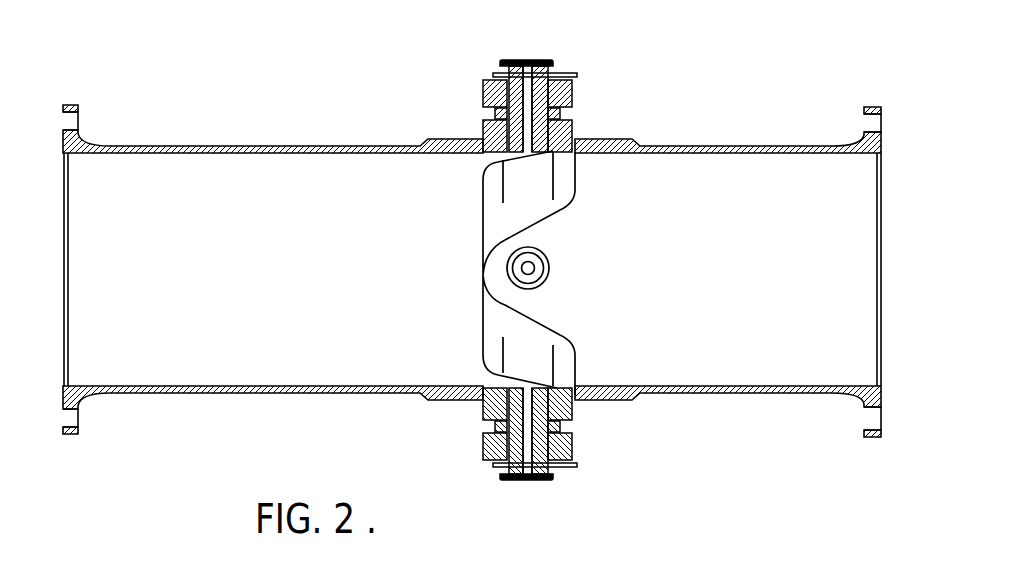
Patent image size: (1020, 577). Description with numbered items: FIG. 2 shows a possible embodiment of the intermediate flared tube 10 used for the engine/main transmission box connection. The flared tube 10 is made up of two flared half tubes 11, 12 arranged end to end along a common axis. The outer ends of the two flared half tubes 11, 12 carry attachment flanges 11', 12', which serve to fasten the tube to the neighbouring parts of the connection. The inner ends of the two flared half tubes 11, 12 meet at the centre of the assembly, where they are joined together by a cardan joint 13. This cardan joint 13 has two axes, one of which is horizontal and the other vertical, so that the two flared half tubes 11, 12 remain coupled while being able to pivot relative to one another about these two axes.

The intermediate flared tube 10 is at (640, 138).
The flared half tube 11 is at (728, 251).
The attachment flange 11' is at (851, 252).
The flared half tube 12 is at (273, 248).
The attachment flange 12' is at (99, 250).
The cardan joint 13 is at (578, 107).